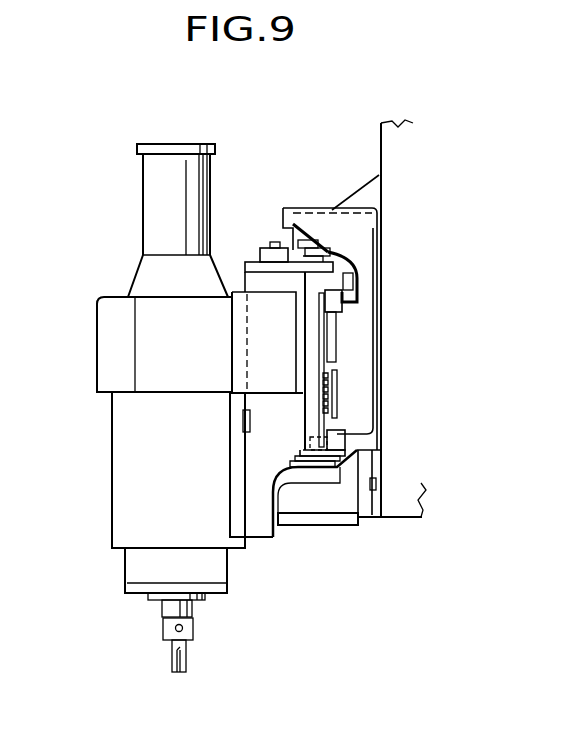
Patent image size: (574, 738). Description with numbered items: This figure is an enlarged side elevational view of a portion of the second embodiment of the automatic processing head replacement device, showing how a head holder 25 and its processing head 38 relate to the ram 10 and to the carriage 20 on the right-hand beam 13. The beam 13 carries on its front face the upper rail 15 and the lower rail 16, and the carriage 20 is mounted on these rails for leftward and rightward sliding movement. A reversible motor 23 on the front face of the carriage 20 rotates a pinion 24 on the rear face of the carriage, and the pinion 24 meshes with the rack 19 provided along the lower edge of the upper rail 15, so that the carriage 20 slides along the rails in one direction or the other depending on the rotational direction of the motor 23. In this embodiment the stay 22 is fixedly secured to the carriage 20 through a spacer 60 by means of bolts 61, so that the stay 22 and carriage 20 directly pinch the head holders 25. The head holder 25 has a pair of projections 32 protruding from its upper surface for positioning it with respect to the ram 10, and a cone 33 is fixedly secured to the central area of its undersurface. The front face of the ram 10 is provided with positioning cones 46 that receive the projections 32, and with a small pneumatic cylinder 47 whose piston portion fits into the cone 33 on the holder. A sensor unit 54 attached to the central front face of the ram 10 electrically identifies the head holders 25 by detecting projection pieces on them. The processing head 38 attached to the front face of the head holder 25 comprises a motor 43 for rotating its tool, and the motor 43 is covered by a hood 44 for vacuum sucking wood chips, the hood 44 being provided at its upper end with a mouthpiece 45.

The ram 10 is at (388, 152).
The mouthpiece 45 is at (156, 146).
The hood 44 is at (152, 267).
The reversible motor 23 is at (155, 345).
The spacer 60 is at (258, 263).
The stay 22 is at (253, 258).
The bolts 61 is at (275, 243).
The processing head 38 is at (113, 465).
The head holder 25 is at (253, 458).
The motor 43 is at (138, 568).
The projections 32 is at (330, 245).
The positioning cones 46 is at (308, 243).
The right-hand beam 13 is at (364, 254).
The upper rail 15 is at (338, 305).
The rack 19 is at (337, 317).
The pinion 24 is at (333, 350).
The sensor unit 54 is at (337, 390).
The lower rail 16 is at (338, 433).
The carriage 20 is at (307, 412).
The pneumatic cylinder 47 is at (323, 507).
The cone 33 is at (358, 522).